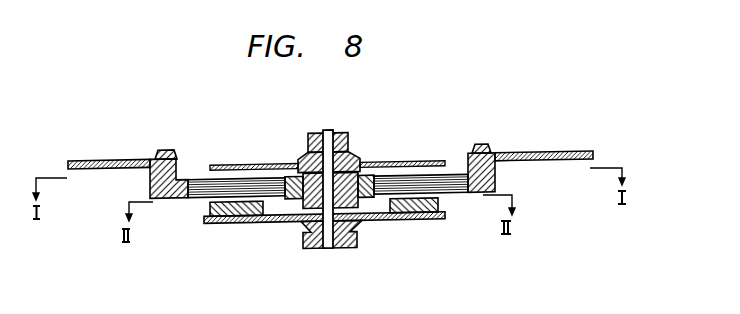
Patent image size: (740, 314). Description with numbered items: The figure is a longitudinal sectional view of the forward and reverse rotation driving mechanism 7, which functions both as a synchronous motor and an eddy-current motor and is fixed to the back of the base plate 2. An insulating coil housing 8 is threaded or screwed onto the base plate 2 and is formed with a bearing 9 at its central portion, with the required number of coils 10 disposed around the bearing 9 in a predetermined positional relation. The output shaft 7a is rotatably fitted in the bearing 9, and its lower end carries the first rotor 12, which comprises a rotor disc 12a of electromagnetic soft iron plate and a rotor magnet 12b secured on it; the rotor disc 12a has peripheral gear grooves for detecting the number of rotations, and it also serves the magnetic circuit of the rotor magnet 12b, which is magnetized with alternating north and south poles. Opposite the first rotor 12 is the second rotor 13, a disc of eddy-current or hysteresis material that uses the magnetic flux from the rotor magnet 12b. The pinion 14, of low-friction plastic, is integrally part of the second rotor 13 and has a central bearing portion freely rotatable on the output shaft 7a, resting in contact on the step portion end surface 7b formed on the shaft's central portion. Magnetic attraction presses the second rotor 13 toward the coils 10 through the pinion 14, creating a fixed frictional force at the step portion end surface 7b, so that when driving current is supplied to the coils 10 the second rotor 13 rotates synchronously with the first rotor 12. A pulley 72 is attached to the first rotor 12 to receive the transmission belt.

The base plate 2 is at (565, 155).
The forward and reverse rotation driving mechanism 7 is at (170, 197).
The output shaft 7a is at (327, 130).
The step portion end surface 7b is at (356, 233).
The insulating coil housing 8 is at (496, 177).
The bearing 9 is at (313, 207).
The coils 10 is at (454, 186).
The first rotor 12 is at (332, 245).
The rotor disc 12a is at (428, 215).
The rotor magnet 12b is at (324, 231).
The second rotor 13 is at (413, 162).
The pinion 14 is at (350, 144).
The pulley 72 is at (305, 238).